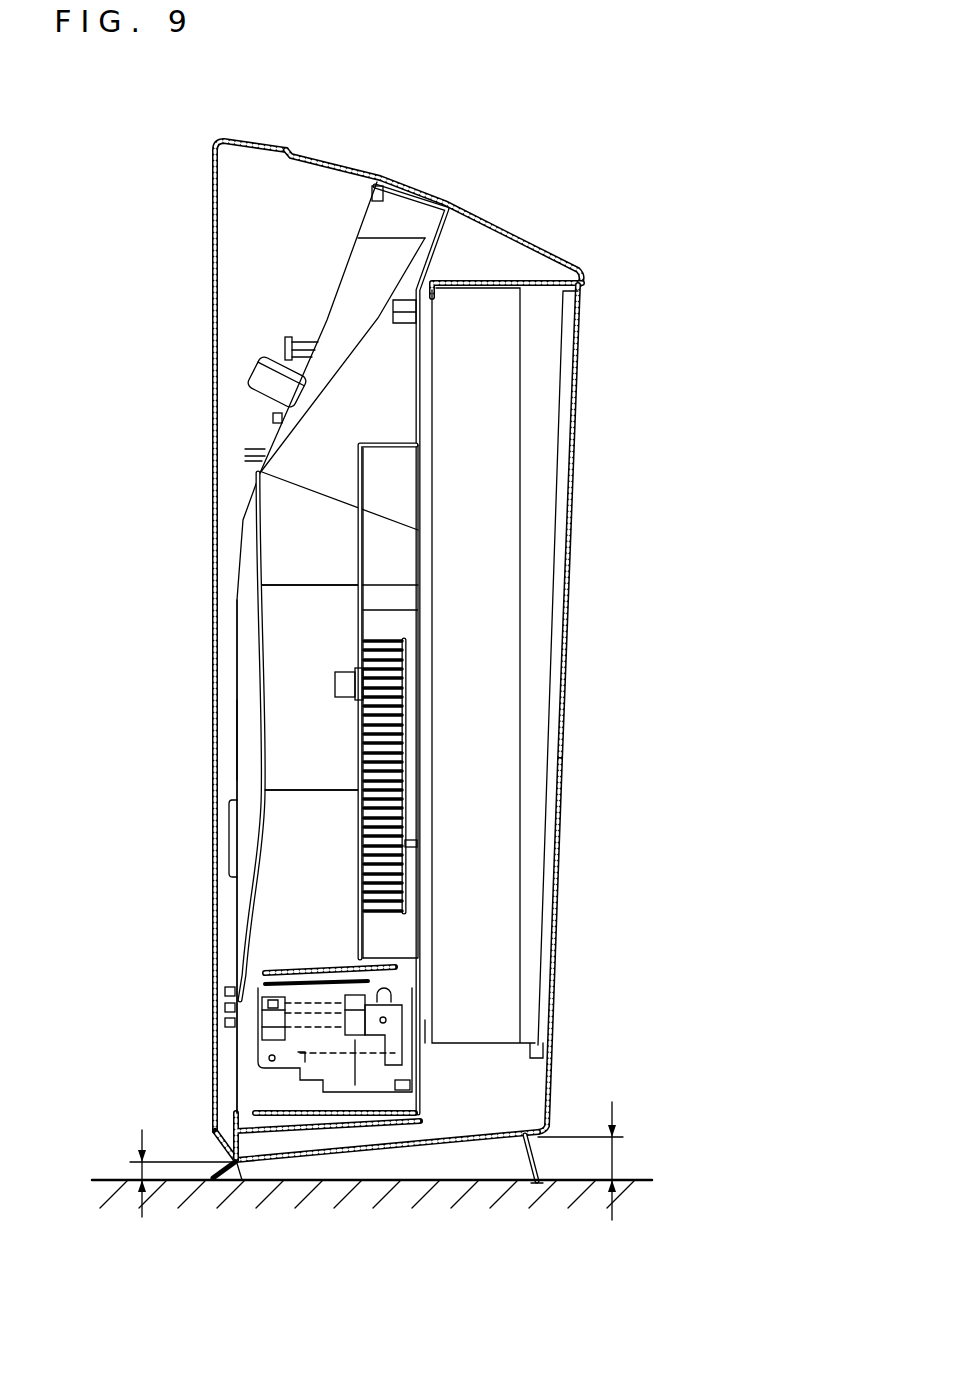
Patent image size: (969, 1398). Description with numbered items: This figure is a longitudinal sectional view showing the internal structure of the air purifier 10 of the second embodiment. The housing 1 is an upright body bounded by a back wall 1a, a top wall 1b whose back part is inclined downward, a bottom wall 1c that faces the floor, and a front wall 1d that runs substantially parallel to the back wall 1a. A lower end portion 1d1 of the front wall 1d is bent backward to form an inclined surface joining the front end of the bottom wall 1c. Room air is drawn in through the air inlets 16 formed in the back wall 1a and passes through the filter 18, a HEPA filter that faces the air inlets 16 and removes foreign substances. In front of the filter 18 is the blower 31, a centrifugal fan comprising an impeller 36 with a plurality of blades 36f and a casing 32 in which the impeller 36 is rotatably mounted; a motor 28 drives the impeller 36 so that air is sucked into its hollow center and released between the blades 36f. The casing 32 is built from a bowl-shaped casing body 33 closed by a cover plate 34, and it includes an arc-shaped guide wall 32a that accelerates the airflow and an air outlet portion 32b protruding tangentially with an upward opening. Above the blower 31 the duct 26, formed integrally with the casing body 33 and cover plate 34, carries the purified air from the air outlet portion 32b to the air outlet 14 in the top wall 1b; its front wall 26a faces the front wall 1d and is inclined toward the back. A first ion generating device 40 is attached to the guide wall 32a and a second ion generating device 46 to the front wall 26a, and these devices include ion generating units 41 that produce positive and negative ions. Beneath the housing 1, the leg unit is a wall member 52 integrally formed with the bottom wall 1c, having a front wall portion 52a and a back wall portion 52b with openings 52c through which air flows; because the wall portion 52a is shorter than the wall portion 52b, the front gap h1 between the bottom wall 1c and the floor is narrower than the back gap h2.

The housing 1 is at (210, 163).
The air purifier 10 is at (574, 246).
The air outlet 14 is at (417, 192).
The back wall 1a is at (553, 1083).
The top wall 1b is at (498, 225).
The bottom wall 1c is at (457, 1147).
The front wall 1d is at (213, 692).
The lower end portion of the front wall 1d1 is at (213, 1147).
The air inlets 16 is at (580, 390).
The filter 18 is at (520, 577).
The duct 26 is at (345, 256).
The front wall of the duct 26a is at (268, 440).
The motor 28 is at (230, 843).
The blower 31 is at (228, 740).
The casing 32 is at (240, 913).
The guide wall 32a is at (262, 1084).
The air outlet portion 32b is at (290, 640).
The casing body 33 is at (233, 522).
The cover plate 34 is at (363, 553).
The impeller 36 is at (410, 800).
The blades 36f is at (390, 775).
The first ion generating device 40 is at (287, 1080).
The ion generating units 41 is at (310, 1060).
The second ion generating device 46 is at (265, 378).
The wall member 52 is at (547, 1167).
The front wall portion 52a is at (210, 1176).
The back wall portion 52b is at (548, 1173).
The openings 52c is at (520, 1157).
The gap on the front side h1 is at (161, 1172).
The gap on the back side h2 is at (597, 1161).